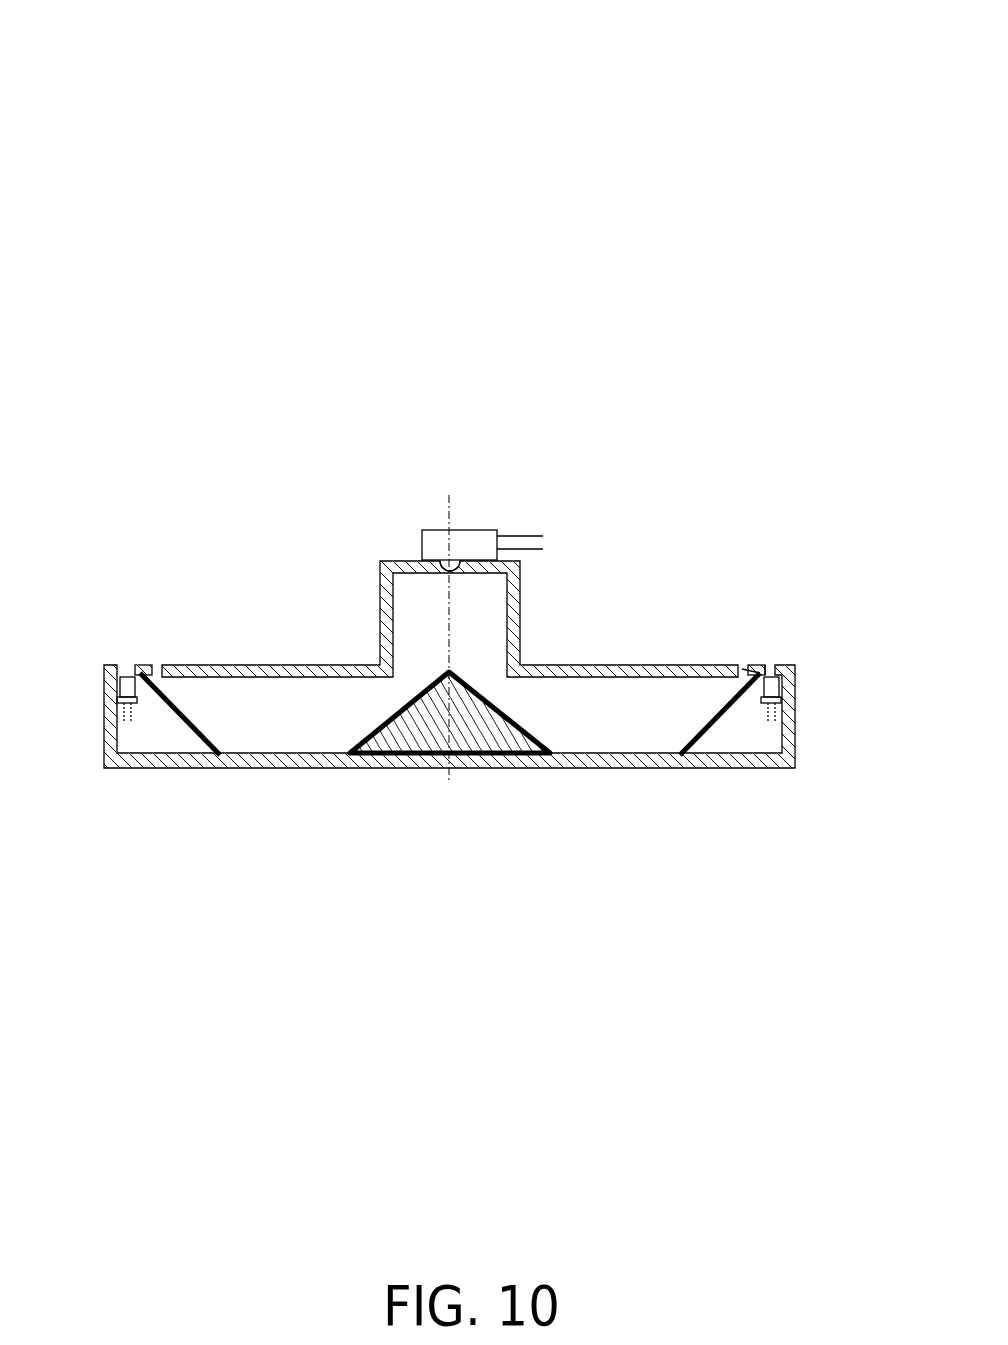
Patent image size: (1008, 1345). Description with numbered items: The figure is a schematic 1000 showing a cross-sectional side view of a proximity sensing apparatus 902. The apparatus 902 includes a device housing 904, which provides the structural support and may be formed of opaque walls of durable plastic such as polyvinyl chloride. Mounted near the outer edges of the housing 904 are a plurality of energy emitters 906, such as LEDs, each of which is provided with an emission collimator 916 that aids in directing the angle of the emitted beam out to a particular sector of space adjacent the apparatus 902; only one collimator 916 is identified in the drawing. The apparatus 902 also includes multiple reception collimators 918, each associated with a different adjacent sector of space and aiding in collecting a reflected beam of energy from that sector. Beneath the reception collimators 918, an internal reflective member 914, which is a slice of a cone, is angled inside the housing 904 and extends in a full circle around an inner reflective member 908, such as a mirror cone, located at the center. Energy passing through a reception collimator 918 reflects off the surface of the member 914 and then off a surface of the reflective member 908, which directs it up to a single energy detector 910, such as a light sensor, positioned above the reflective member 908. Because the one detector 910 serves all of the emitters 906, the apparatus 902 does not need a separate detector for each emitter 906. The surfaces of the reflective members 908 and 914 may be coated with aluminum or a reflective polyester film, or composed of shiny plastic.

The schematic 1000 is at (816, 59).
The proximity sensing apparatus 902 is at (756, 392).
The device housing 904 is at (134, 772).
The energy emitters 906 is at (117, 686).
The reflective member 908 is at (473, 728).
The energy detector 910 is at (472, 543).
The internal reflective member 914 is at (190, 717).
The emission collimator 916 is at (770, 669).
The reception collimators 918 is at (744, 669).